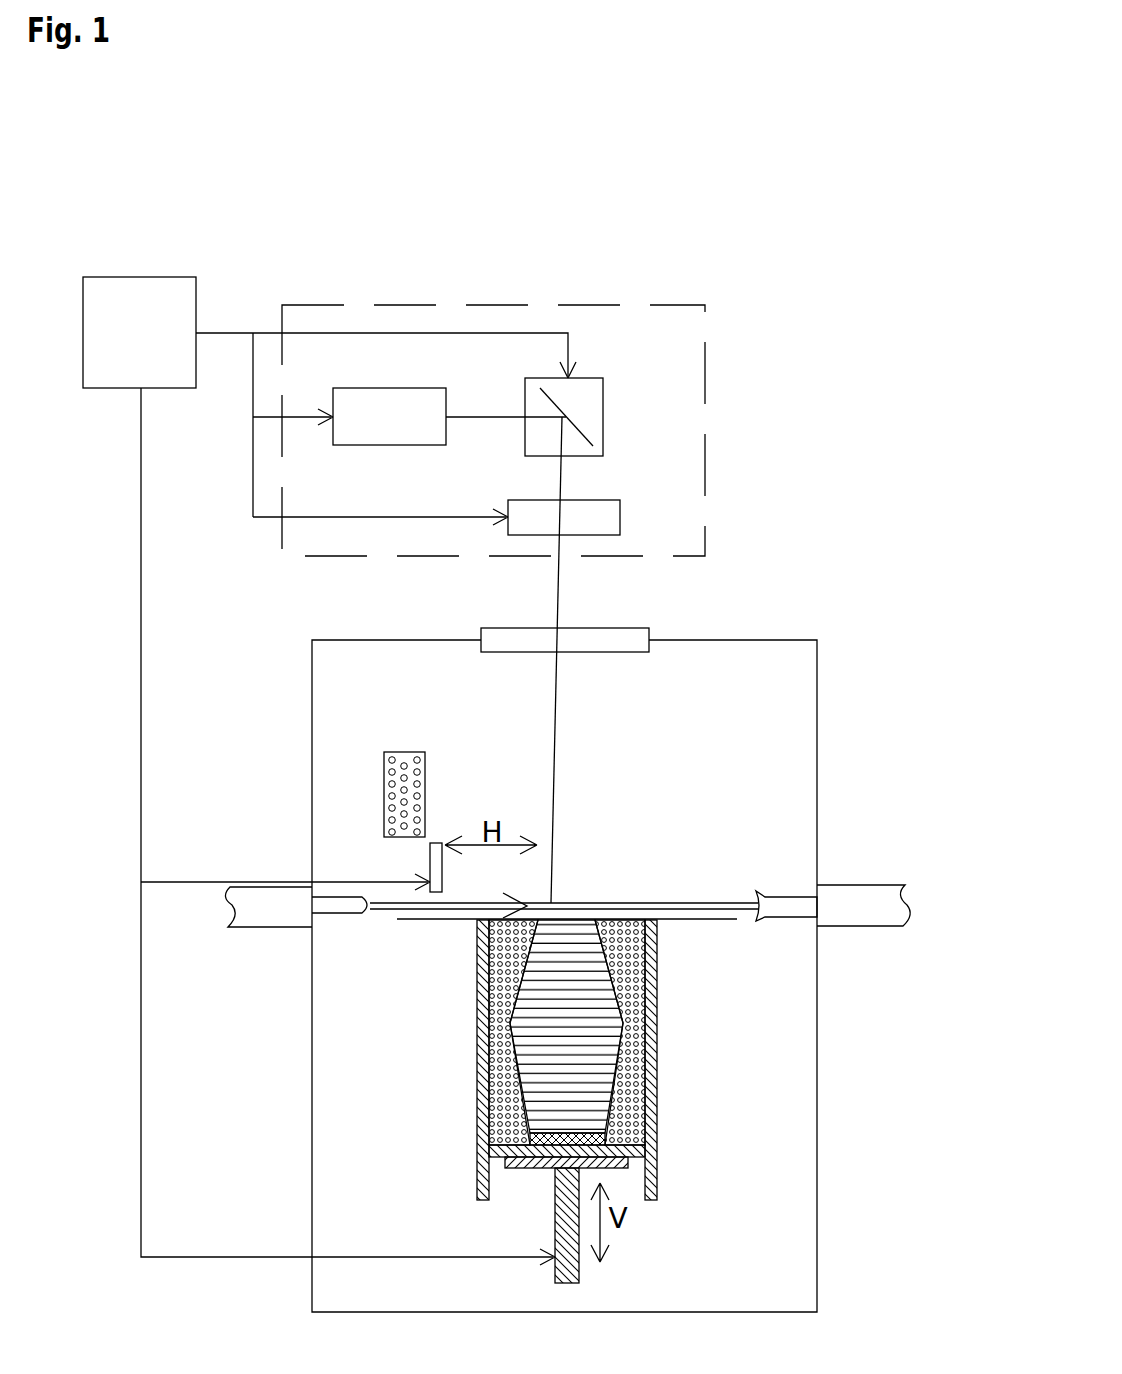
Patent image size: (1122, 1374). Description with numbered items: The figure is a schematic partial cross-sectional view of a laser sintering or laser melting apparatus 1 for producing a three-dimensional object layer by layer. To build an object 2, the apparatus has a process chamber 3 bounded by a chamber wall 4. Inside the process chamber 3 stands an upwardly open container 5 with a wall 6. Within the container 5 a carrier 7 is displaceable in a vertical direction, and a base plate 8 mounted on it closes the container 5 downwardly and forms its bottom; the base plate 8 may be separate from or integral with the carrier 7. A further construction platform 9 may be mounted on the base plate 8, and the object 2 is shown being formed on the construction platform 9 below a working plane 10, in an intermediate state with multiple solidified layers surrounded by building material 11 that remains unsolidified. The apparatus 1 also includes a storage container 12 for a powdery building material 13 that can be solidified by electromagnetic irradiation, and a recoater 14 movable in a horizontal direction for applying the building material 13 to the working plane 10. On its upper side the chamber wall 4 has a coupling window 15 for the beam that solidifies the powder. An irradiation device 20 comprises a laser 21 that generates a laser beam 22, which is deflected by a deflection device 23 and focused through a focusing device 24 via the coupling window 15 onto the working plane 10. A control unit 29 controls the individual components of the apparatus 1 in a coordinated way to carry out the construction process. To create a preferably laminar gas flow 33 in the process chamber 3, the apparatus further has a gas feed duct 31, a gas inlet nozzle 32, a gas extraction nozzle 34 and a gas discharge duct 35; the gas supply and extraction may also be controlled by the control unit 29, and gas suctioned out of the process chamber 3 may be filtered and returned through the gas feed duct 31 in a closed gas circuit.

The laser sintering or laser melting apparatus 1 is at (817, 247).
The object 2 is at (583, 970).
The process chamber 3 is at (424, 668).
The chamber wall 4 is at (357, 640).
The container 5 is at (657, 1110).
The wall 6 is at (657, 1050).
The carrier 7 is at (548, 1162).
The base plate 8 is at (515, 1151).
The construction platform 9 is at (490, 1139).
The working plane 10 is at (633, 918).
The building material 11 is at (478, 962).
The storage container 12 is at (400, 752).
The powdery building material 13 is at (425, 792).
The recoater 14 is at (430, 862).
The coupling window 15 is at (600, 640).
The irradiation device 20 is at (705, 417).
The laser 21 is at (389, 446).
The laser beam 22 is at (466, 417).
The deflection device 23 is at (593, 390).
The focusing device 24 is at (592, 512).
The control unit 29 is at (139, 332).
The gas feed duct 31 is at (250, 915).
The gas inlet nozzle 32 is at (358, 908).
The gas flow 33 is at (590, 903).
The gas extraction nozzle 34 is at (770, 900).
The gas discharge duct 35 is at (875, 903).